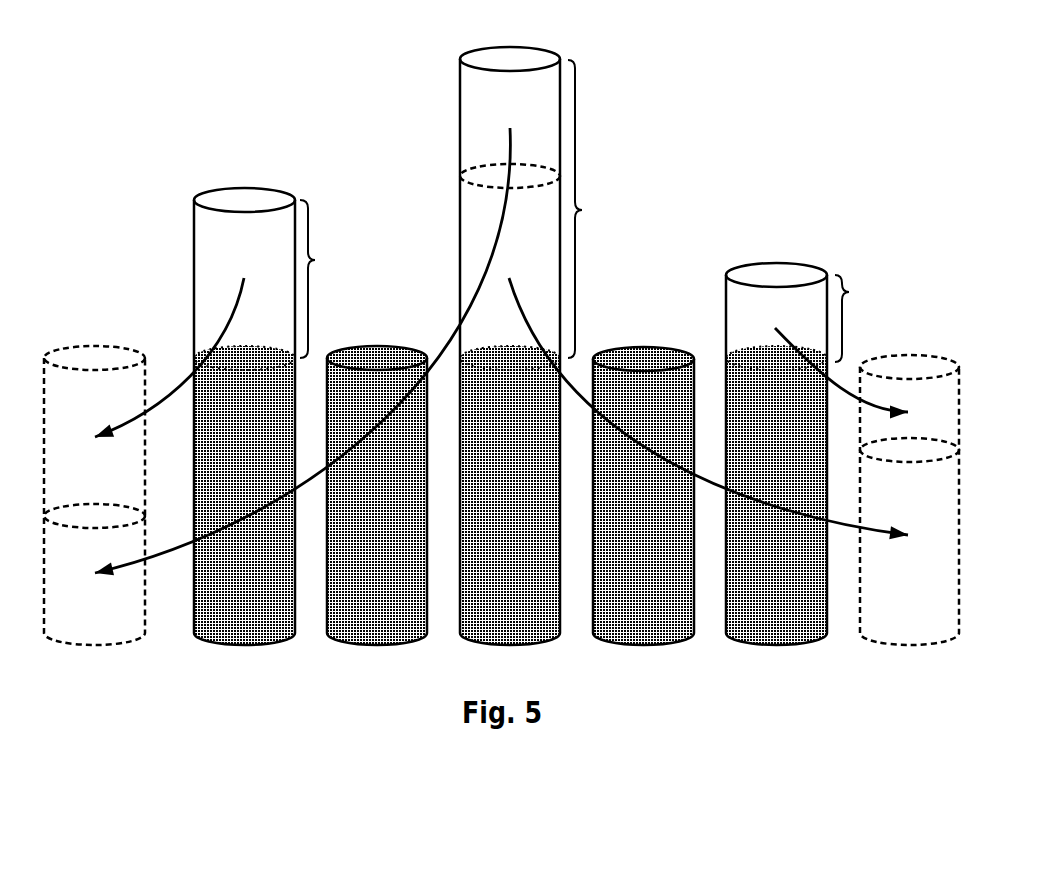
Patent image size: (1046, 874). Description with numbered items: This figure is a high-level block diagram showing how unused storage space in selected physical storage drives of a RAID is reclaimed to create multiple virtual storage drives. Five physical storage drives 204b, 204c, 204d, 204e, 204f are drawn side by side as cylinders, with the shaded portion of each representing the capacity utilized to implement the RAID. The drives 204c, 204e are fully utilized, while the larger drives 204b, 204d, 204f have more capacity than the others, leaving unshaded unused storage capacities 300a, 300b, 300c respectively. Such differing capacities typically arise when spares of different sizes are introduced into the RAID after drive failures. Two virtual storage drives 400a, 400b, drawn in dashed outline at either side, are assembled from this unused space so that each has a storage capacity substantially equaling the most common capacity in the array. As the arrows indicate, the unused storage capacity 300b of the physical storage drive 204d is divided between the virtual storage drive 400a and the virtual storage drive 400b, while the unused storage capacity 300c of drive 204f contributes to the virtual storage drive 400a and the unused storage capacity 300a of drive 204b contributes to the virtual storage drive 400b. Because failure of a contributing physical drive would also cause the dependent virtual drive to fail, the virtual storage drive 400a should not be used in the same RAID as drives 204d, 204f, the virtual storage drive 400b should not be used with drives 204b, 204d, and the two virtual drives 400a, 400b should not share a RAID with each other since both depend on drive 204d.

The physical storage drive 204b is at (244, 200).
The physical storage drive 204c is at (377, 360).
The physical storage drive 204d is at (509, 58).
The physical storage drive 204e is at (643, 360).
The physical storage drive 204f is at (775, 277).
The unused storage capacity 300a is at (332, 279).
The unused storage capacity 300b is at (599, 209).
The unused storage capacity 300c is at (864, 318).
The virtual storage drive 400a is at (908, 366).
The virtual storage drive 400b is at (94, 358).